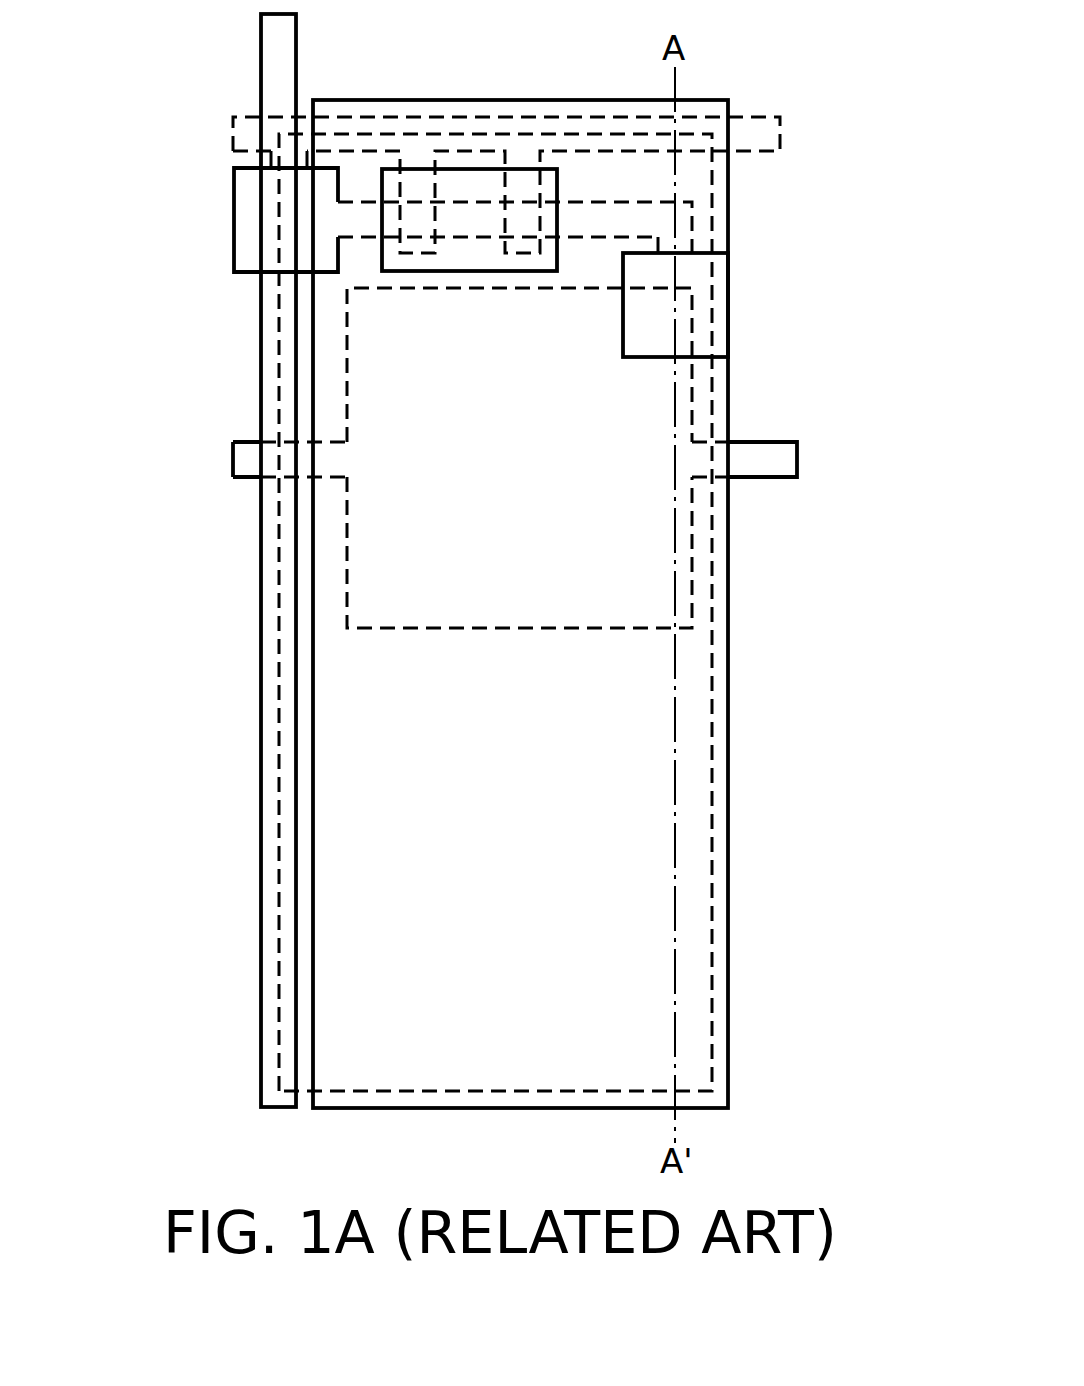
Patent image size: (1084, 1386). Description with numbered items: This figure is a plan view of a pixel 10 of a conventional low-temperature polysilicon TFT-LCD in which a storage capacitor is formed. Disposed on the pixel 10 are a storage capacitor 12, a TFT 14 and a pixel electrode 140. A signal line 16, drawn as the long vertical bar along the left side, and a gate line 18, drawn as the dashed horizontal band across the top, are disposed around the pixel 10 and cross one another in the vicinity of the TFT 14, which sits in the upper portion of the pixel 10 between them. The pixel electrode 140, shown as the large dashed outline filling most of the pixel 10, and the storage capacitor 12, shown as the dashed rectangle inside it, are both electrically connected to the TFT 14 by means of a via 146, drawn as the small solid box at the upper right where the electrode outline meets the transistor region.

The pixel 10 is at (727, 868).
The storage capacitor 12 is at (368, 562).
The TFT 14 is at (383, 219).
The pixel electrode 140 is at (277, 899).
The via 146 is at (718, 305).
The signal line 16 is at (277, 47).
The gate line 18 is at (470, 128).